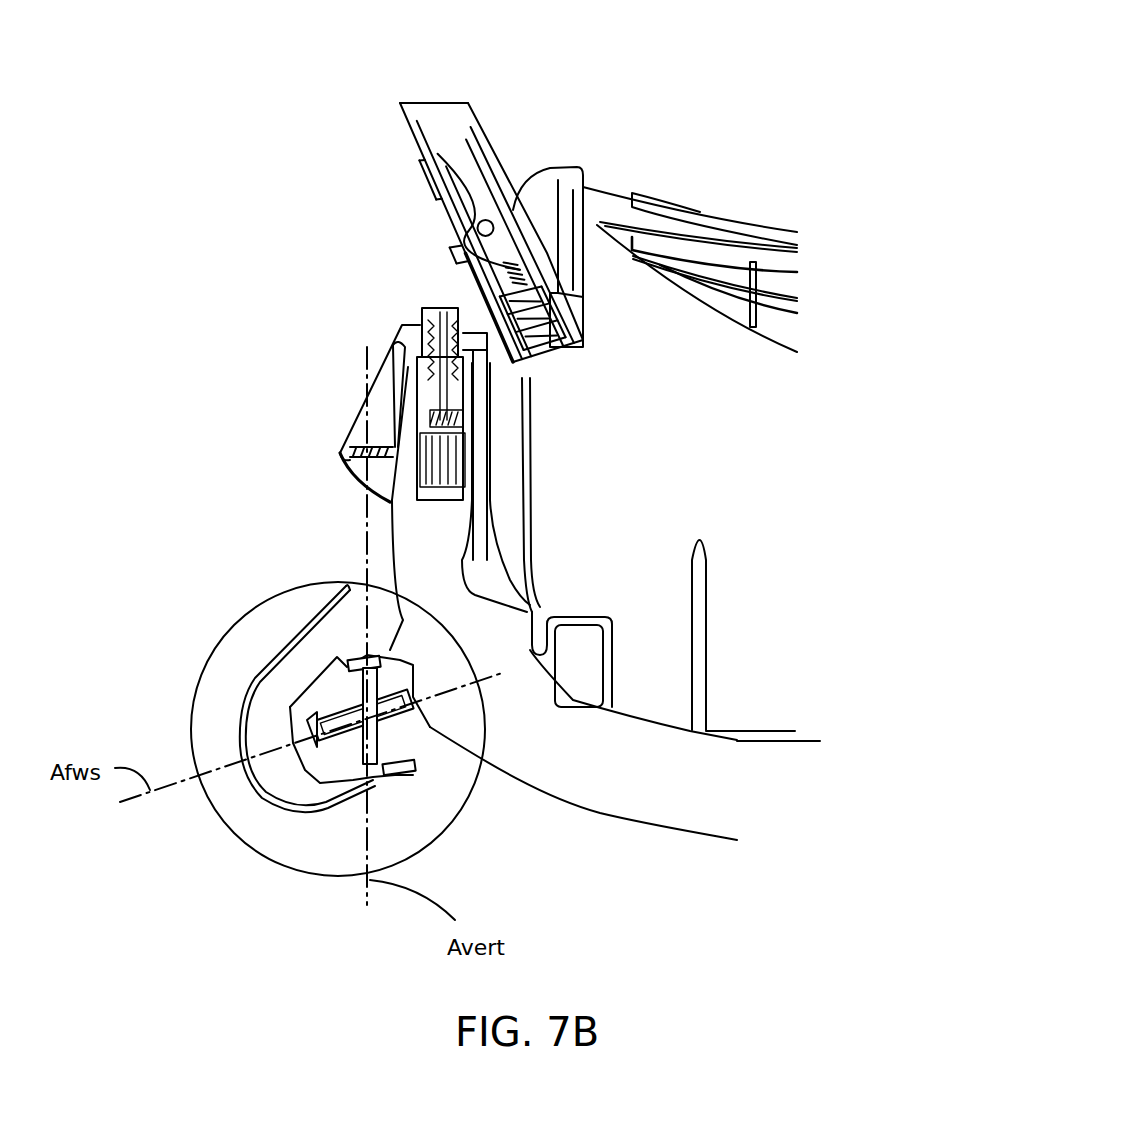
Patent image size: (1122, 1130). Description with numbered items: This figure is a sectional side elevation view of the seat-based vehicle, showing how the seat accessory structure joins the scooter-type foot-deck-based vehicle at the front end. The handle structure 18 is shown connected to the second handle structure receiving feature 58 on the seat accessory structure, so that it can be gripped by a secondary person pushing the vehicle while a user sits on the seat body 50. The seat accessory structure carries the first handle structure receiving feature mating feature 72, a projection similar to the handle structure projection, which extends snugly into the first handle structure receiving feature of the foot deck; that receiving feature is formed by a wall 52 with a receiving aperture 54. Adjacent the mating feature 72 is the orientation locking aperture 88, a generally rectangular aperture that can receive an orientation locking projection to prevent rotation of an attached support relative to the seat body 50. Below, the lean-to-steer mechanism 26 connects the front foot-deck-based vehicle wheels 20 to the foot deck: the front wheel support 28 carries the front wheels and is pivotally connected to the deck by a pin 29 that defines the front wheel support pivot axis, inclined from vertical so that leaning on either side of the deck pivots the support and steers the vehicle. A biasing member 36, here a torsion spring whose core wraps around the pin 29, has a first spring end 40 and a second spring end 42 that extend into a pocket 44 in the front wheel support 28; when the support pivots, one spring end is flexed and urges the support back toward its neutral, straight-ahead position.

The handle structure 18 is at (465, 184).
The seat body 50 is at (708, 208).
The wall 52 is at (433, 438).
The second handle structure receiving feature 58 is at (507, 293).
The foot-deck-based vehicle wheels 20 is at (249, 568).
The receiving aperture 54 is at (392, 494).
The front wheel support 28 is at (293, 690).
The first handle structure receiving feature mating feature 72 is at (527, 608).
The orientation locking aperture 88 is at (583, 655).
The second spring end 42 is at (290, 712).
The first spring end 40 is at (320, 747).
The pocket 44 is at (313, 743).
The lean-to-steer mechanism 26 is at (332, 812).
The biasing member 36 is at (395, 733).
The pin 29 is at (400, 773).